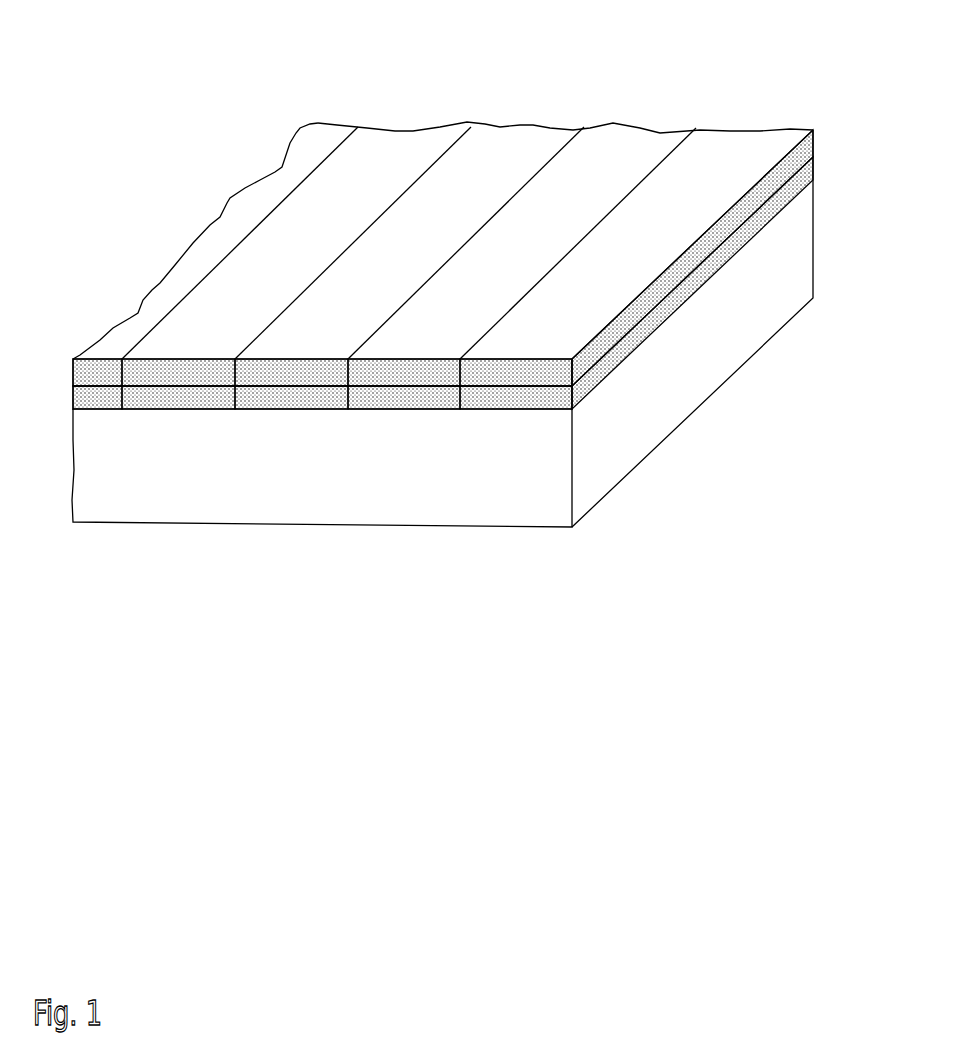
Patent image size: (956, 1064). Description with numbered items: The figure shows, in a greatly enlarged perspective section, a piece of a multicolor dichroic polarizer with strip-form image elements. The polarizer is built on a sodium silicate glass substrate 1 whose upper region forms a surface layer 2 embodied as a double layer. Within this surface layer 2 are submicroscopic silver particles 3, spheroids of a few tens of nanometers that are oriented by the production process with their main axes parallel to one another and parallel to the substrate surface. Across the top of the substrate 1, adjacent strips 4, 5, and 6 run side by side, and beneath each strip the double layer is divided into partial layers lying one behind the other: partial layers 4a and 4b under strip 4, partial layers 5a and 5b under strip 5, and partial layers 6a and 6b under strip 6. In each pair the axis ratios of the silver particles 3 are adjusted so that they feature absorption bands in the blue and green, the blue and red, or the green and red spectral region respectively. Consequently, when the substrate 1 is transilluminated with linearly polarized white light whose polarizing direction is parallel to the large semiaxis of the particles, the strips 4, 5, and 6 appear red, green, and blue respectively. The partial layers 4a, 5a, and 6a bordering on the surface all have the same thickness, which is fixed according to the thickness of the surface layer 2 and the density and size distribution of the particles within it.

The sodium silicate glass substrate 1 is at (750, 308).
The surface layer 2 is at (813, 130).
The submicroscopic silver particles 3 is at (555, 373).
The strip 4 is at (378, 160).
The strip 5 is at (507, 155).
The strip 6 is at (318, 147).
The partial layer 4a is at (183, 367).
The partial layer 5a is at (297, 370).
The partial layer 6a is at (410, 375).
The partial layer 4b is at (192, 394).
The partial layer 5b is at (295, 397).
The partial layer 6b is at (403, 398).